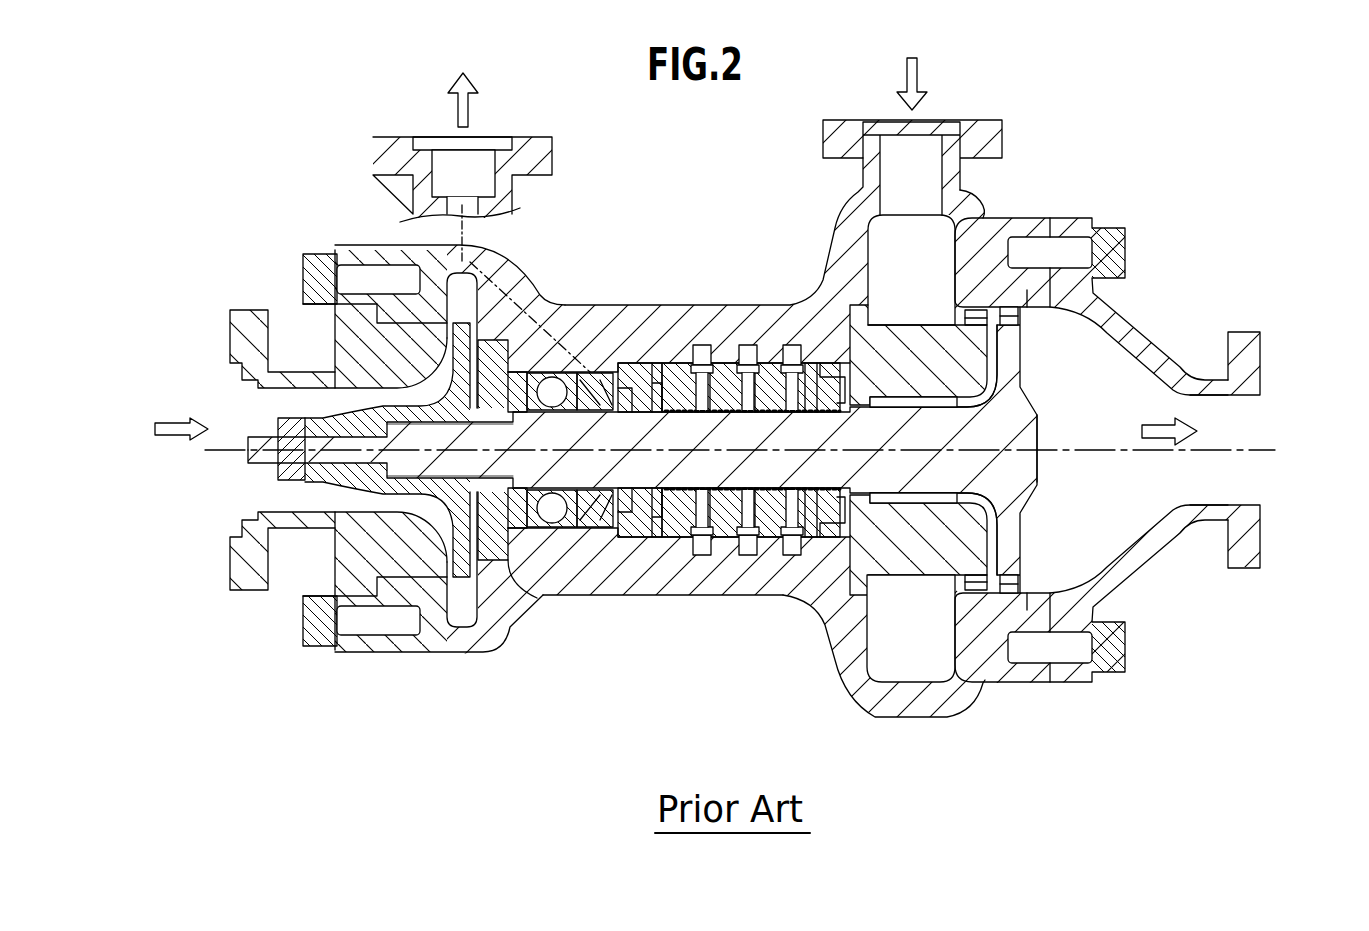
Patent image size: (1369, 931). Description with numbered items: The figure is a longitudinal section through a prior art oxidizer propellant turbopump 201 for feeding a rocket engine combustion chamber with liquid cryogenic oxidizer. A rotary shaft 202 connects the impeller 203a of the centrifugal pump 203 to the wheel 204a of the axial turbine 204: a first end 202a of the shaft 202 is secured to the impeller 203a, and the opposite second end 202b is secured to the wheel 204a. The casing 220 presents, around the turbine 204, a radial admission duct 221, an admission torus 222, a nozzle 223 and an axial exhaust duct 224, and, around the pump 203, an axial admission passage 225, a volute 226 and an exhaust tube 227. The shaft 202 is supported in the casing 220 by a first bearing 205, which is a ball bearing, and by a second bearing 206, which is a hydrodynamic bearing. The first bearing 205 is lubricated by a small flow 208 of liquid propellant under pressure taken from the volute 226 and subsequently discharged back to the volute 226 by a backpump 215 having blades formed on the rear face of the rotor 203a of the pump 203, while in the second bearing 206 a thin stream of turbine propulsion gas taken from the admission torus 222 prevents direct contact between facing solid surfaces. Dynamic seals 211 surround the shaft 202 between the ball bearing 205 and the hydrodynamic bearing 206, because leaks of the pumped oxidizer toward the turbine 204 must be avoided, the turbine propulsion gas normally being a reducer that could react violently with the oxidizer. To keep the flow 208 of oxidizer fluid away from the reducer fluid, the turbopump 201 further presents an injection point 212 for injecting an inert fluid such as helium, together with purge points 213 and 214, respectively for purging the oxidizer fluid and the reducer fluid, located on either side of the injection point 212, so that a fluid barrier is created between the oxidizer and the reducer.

The oxidizer propellant turbopump 201 is at (262, 637).
The rotary shaft 202 is at (642, 472).
The first end of the shaft 202a is at (485, 432).
The second end of the shaft 202b is at (947, 463).
The centrifugal pump 203 is at (363, 333).
The impeller 203a is at (490, 330).
The axial turbine 204 is at (1003, 232).
The wheel 204a is at (1023, 318).
The first bearing 205 is at (565, 372).
The second bearing 206 is at (922, 506).
The flow of liquid propellant 208 is at (472, 234).
The dynamic seals 211 is at (678, 414).
The injection point 212 is at (742, 488).
The purge point 213 is at (700, 556).
The purge point 214 is at (790, 550).
The backpump 215 is at (488, 540).
The casing 220 is at (688, 305).
The radial admission duct 221 is at (924, 150).
The admission torus 222 is at (935, 675).
The nozzle 223 is at (960, 316).
The axial exhaust duct 224 is at (1226, 423).
The axial admission passage 225 is at (260, 412).
The volute 226 is at (457, 607).
The exhaust tube 227 is at (480, 170).